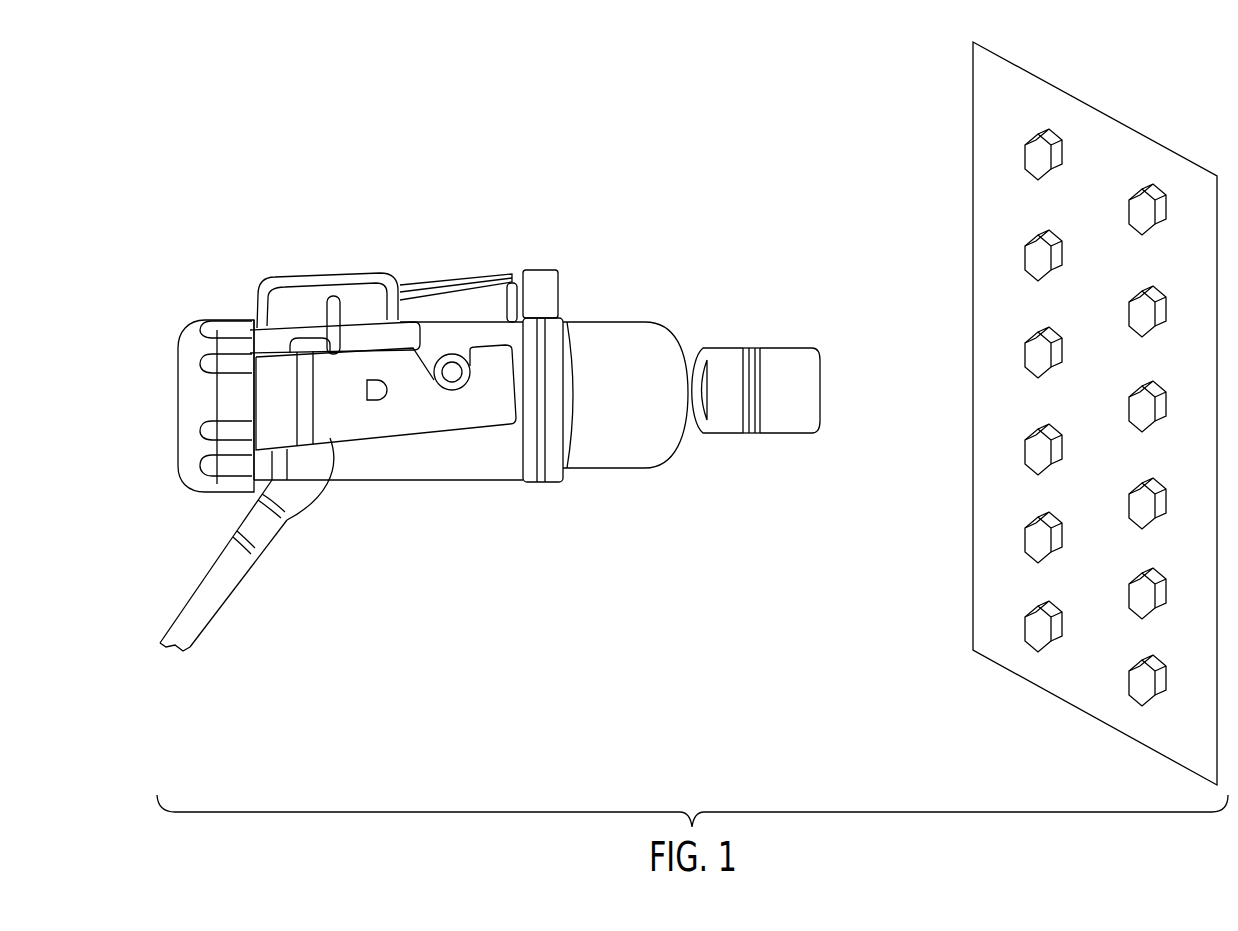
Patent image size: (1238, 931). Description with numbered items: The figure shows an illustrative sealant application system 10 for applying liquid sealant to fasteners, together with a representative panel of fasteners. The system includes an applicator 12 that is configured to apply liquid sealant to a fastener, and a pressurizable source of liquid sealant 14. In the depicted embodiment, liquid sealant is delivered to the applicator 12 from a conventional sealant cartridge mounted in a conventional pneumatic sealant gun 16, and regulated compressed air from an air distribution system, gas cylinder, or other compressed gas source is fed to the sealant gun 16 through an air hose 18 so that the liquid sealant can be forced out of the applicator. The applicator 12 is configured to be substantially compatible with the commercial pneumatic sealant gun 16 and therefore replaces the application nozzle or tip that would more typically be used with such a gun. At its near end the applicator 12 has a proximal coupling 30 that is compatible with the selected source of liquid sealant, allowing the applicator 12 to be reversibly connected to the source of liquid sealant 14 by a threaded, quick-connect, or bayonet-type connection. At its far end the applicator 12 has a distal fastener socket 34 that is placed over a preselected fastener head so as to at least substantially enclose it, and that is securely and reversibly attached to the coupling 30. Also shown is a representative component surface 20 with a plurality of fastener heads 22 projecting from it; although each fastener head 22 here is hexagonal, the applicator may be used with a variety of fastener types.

The sealant application system 10 is at (605, 214).
The applicator 12 is at (767, 324).
The pressurizable source of liquid sealant 14 is at (434, 256).
The pneumatic sealant gun 16 is at (610, 470).
The air hose 18 is at (228, 594).
The component surface 20 is at (1120, 140).
The fastener heads 22 is at (1046, 130).
The proximal coupling 30 is at (720, 434).
The distal fastener socket 34 is at (777, 434).